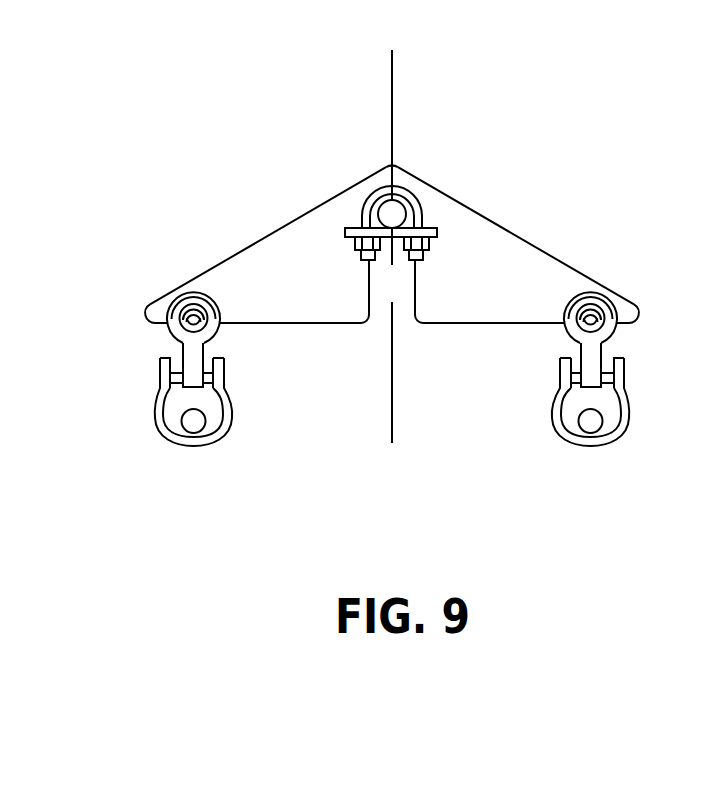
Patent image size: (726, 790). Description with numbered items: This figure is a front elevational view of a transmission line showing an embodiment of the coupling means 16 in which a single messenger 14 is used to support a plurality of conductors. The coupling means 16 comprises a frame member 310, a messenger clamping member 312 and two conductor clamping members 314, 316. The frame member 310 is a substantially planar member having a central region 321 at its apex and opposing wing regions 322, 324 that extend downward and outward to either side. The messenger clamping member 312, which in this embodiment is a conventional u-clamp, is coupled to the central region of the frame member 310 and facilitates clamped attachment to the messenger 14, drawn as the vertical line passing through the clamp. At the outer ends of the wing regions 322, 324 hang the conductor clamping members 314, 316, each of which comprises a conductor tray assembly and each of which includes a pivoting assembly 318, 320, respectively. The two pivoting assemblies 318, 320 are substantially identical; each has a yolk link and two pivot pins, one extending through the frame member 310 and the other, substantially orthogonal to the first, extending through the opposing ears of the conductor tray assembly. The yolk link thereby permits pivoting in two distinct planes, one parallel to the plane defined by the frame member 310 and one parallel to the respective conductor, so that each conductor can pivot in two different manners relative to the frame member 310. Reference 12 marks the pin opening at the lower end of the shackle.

The pin hole 12 is at (185, 430).
The messenger 14 is at (422, 172).
The coupling means 16 is at (378, 284).
The frame member 310 is at (373, 197).
The messenger clamping member 312 is at (426, 207).
The conductor clamping member 314 is at (228, 446).
The conductor clamping member 316 is at (615, 438).
The pivoting assembly 318 is at (170, 431).
The pivoting assembly 320 is at (586, 422).
The plate apex 321 is at (408, 155).
The wing region 322 is at (312, 207).
The wing region 324 is at (547, 238).